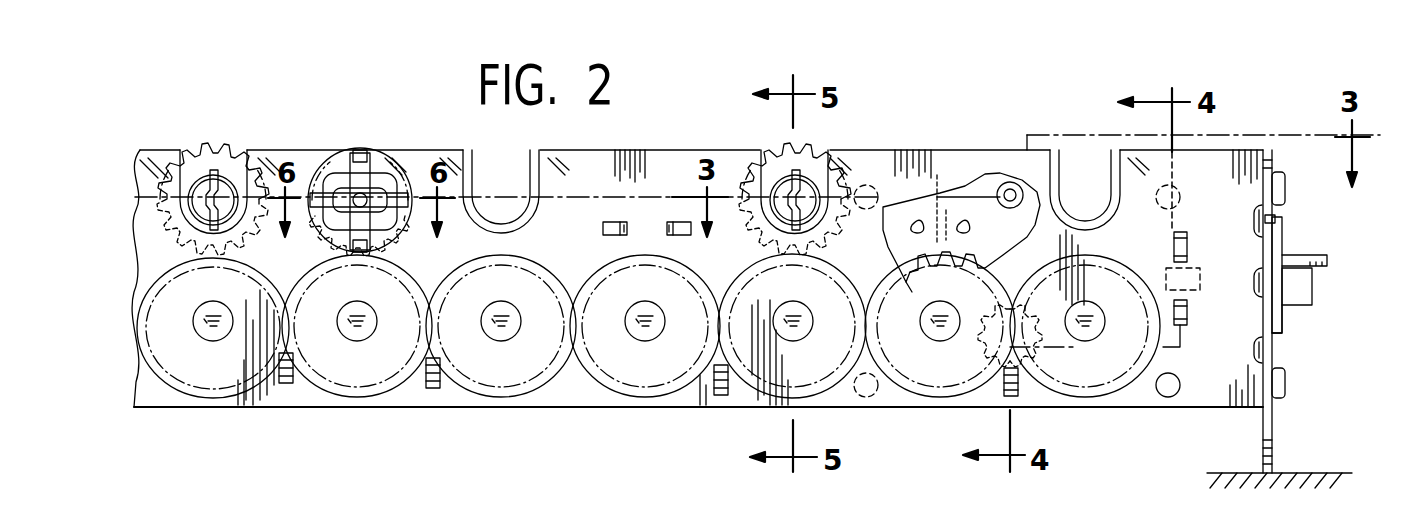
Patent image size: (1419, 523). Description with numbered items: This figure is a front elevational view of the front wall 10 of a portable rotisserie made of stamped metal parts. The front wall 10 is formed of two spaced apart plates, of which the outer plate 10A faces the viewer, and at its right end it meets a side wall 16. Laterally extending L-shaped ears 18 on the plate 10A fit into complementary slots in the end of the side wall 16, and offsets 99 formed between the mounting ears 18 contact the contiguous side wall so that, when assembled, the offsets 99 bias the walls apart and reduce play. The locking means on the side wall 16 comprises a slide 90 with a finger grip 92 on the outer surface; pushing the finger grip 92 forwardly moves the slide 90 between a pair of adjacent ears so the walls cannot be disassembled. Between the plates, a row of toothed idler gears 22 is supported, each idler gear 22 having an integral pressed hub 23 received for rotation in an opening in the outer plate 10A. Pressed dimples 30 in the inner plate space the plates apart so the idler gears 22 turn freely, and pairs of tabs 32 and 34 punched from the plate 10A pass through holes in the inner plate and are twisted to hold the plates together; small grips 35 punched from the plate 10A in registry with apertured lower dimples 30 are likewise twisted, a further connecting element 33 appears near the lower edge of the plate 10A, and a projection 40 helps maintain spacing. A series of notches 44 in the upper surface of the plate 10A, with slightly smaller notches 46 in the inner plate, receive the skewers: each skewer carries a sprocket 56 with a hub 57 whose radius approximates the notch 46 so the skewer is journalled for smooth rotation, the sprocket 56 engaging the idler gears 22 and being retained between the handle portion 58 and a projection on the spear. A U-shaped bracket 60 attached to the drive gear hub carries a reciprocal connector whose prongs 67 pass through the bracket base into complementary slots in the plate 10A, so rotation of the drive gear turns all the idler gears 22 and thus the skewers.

The front wall 10 is at (591, 409).
The outer plate 10A is at (634, 150).
The side wall 16 is at (1274, 438).
The L-shaped ears 18 is at (1286, 191).
The toothed idler gears 22 is at (1075, 430).
The integral pressed hub 23 is at (943, 341).
The pressed dimples 30 is at (1010, 184).
The tabs 32 is at (690, 236).
The clip 33 is at (441, 390).
The tabs 34 is at (607, 225).
The small grips 35 is at (432, 393).
The projections 40 is at (937, 198).
The notches 44 is at (470, 226).
The slightly smaller notches 46 is at (521, 196).
The sprocket 56 is at (218, 148).
The hub 57 is at (802, 176).
The handle portion 58 is at (799, 204).
The U-shaped bracket 60 is at (345, 172).
The prongs 67 is at (384, 156).
The slide 90 is at (1314, 285).
The finger grip 92 is at (1300, 305).
The offsets 99 is at (1302, 262).